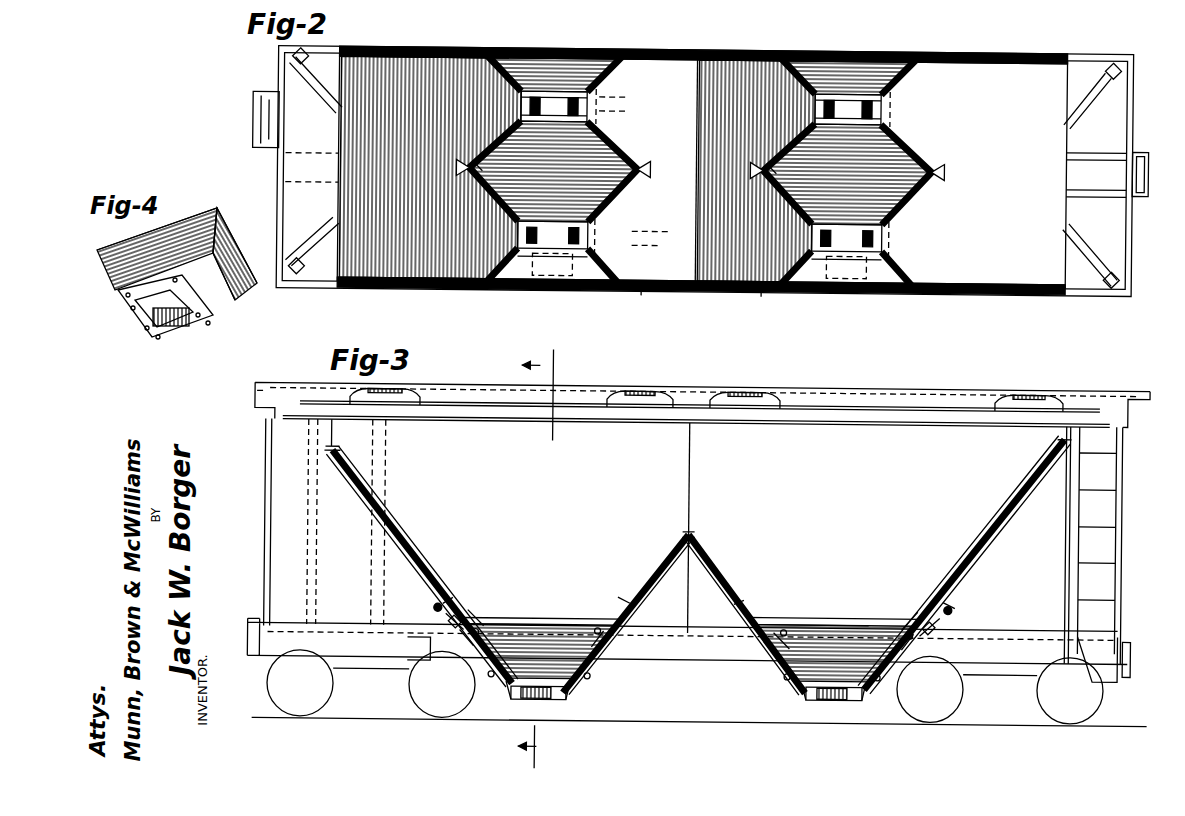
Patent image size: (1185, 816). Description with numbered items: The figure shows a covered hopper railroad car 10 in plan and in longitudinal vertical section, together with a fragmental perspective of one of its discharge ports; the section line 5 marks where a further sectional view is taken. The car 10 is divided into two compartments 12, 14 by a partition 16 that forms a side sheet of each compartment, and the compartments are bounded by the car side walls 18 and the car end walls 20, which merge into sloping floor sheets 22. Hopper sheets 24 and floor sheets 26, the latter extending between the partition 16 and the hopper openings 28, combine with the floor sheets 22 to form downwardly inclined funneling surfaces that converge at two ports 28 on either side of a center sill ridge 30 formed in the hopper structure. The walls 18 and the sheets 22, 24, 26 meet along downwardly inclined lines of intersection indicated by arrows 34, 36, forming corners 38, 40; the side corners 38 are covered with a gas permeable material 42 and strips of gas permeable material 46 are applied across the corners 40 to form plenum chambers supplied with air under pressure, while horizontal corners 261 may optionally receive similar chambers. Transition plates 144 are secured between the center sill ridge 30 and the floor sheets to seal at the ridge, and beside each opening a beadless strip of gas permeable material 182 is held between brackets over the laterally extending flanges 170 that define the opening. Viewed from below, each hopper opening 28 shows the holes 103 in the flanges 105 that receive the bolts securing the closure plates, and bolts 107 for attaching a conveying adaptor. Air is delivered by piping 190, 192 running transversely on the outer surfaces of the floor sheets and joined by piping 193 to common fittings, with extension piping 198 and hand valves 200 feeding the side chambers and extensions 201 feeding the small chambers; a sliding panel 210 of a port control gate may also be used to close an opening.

In FIG. 3, the section line 5- 5 is at (546, 558).
In FIG. 2, the railroad car 10 is at (1146, 72).
In FIG. 3, the railroad car 10 is at (1126, 384).
In FIG. 2, the compartment 12 is at (1063, 131).
In FIG. 2, the compartment 14 is at (428, 60).
In FIG. 2, the partition 16 is at (690, 155).
In FIG. 3, the partition 16 is at (702, 465).
In FIG. 2, the car side wall 18 is at (1000, 60).
In FIG. 2, the car end wall 20 is at (352, 158).
In FIG. 3, the car end wall 20 is at (337, 433).
In FIG. 2, the sloping floor sheet 22 is at (362, 198).
In FIG. 3, the sloping floor sheet 22 is at (975, 572).
In FIG. 4, the sloping floor sheet 22 is at (248, 278).
In FIG. 2, the hopper sheet 24 is at (870, 95).
In FIG. 3, the hopper sheet 24 is at (850, 650).
In FIG. 2, the floor sheet 26 is at (700, 292).
In FIG. 3, the floor sheet 26 is at (735, 578).
In FIG. 2, the hopper opening 28 is at (565, 95).
In FIG. 3, the hopper opening 28 is at (551, 702).
In FIG. 2, the center sill ridge 30 is at (625, 135).
In FIG. 3, the center sill ridge 30 is at (552, 615).
In FIG. 2, the line of intersection 34 is at (400, 60).
In FIG. 3, the line of intersection 34 is at (414, 508).
In FIG. 2, the line of intersection 36 is at (500, 125).
In FIG. 3, the line of intersection 36 is at (550, 650).
In FIG. 2, the corner 38 is at (405, 50).
In FIG. 3, the corner 38 is at (420, 530).
In FIG. 2, the corner 40 is at (500, 55).
In FIG. 3, the corner 40 is at (495, 630).
In FIG. 2, the gas permeable material 42 is at (467, 49).
In FIG. 3, the gas permeable material 42 is at (432, 548).
In FIG. 2, the gas permeable material strip 46 is at (800, 58).
In FIG. 3, the gas permeable material strip 46 is at (508, 638).
In FIG. 4, the hole 103 is at (122, 290).
In FIG. 4, the flange 105 is at (125, 298).
In FIG. 4, the bolt 107 is at (131, 310).
In FIG. 2, the transition plate 144 is at (470, 195).
In FIG. 3, the transition plate 144 is at (460, 605).
In FIG. 4, the laterally extending flange 170 is at (136, 318).
In FIG. 2, the gas permeable material strip 182 is at (570, 130).
In FIG. 2, the piping 190 is at (643, 164).
In FIG. 3, the piping 190 is at (595, 678).
In FIG. 2, the piping 192 is at (532, 264).
In FIG. 3, the piping 192 is at (505, 685).
In FIG. 2, the piping 193 is at (520, 108).
In FIG. 3, the extension piping 198 is at (436, 609).
In FIG. 3, the hand valve 200 is at (935, 640).
In FIG. 2, the extension 201 is at (581, 174).
In FIG. 3, the extension 201 is at (805, 690).
In FIG. 3, the sliding panel 210 is at (418, 660).
In FIG. 3, the horizontal corner 261 is at (345, 450).